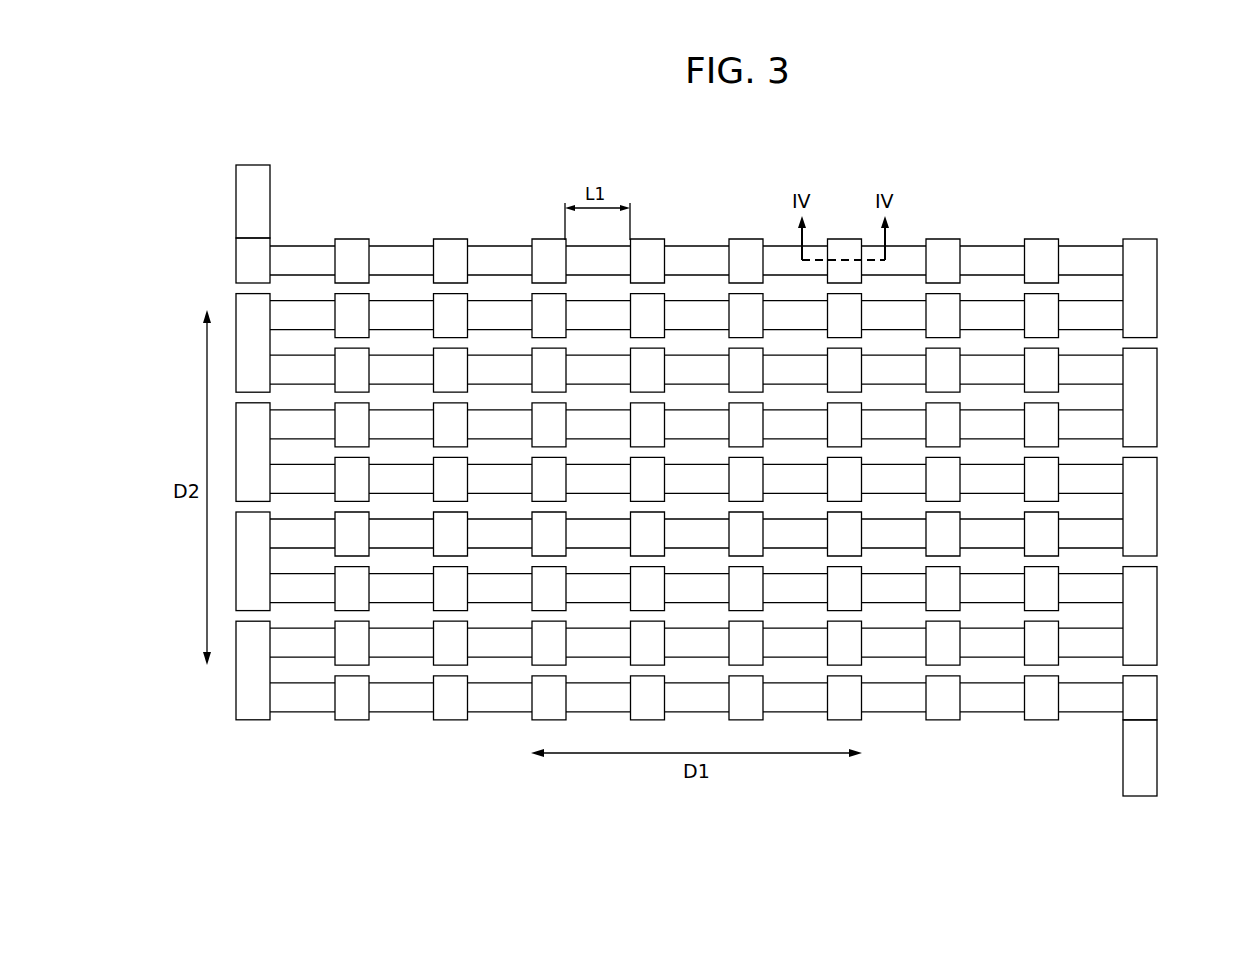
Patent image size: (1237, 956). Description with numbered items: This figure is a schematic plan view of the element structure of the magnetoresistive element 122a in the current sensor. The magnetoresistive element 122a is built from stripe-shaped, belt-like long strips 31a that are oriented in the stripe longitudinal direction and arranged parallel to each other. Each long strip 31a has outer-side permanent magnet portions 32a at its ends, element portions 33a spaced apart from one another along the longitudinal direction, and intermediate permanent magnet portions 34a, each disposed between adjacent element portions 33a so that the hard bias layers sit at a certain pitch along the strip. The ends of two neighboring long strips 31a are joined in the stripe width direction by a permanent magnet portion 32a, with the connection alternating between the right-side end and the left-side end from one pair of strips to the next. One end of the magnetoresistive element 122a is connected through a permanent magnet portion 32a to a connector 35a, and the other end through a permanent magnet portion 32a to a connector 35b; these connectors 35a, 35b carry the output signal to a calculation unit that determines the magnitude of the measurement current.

The magnetoresistive element 122a is at (1064, 127).
The long strip 31a is at (946, 190).
The outer-side permanent magnet portion 32a is at (240, 255).
The element portion 33a is at (300, 249).
The intermediate permanent magnet portion 34a is at (350, 248).
The connector 35a is at (253, 170).
The connector 35b is at (1158, 752).